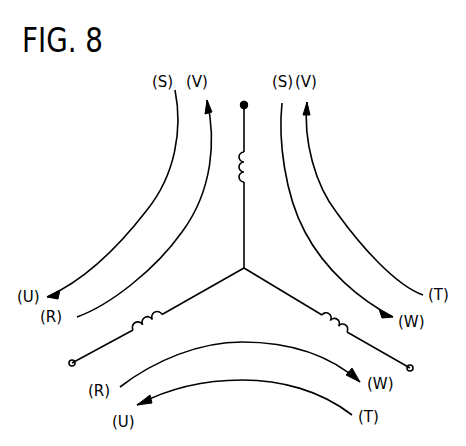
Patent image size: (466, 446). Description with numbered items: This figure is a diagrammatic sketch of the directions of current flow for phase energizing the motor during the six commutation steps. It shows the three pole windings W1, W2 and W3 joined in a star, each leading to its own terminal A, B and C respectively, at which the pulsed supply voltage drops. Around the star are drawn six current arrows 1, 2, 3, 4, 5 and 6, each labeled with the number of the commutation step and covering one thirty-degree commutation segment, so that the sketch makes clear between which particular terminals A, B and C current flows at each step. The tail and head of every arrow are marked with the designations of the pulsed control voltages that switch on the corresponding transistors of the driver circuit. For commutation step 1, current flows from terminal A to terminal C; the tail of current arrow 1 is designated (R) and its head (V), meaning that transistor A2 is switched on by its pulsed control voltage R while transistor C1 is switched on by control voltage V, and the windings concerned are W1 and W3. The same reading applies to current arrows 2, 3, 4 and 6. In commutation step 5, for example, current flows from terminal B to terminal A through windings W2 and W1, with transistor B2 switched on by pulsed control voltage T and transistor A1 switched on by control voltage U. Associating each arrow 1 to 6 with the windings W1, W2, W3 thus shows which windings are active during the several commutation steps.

The commutation step current arrow 1 is at (144, 208).
The commutation step current arrow 2 is at (240, 359).
The commutation step current arrow 3 is at (337, 210).
The commutation step current arrow 4 is at (112, 194).
The commutation step current arrow 5 is at (244, 392).
The commutation step current arrow 6 is at (363, 198).
The winding W1 is at (158, 315).
The winding W2 is at (327, 318).
The winding W3 is at (256, 185).
The terminal A is at (62, 376).
The terminal B is at (416, 373).
The terminal C is at (242, 93).